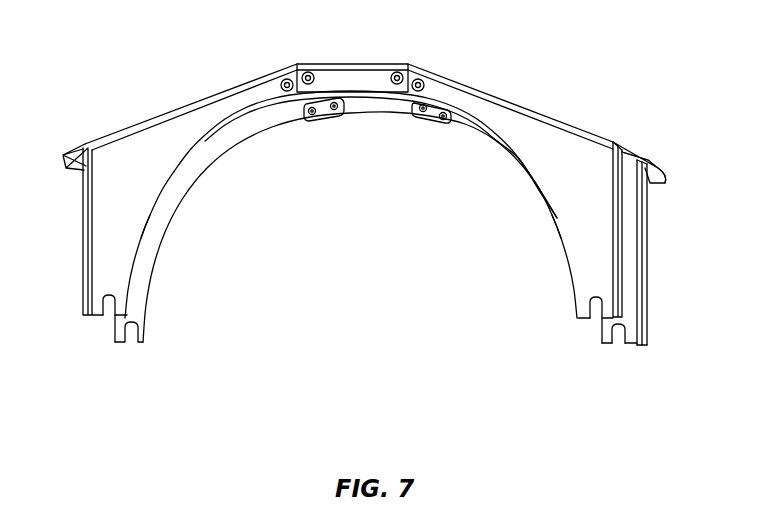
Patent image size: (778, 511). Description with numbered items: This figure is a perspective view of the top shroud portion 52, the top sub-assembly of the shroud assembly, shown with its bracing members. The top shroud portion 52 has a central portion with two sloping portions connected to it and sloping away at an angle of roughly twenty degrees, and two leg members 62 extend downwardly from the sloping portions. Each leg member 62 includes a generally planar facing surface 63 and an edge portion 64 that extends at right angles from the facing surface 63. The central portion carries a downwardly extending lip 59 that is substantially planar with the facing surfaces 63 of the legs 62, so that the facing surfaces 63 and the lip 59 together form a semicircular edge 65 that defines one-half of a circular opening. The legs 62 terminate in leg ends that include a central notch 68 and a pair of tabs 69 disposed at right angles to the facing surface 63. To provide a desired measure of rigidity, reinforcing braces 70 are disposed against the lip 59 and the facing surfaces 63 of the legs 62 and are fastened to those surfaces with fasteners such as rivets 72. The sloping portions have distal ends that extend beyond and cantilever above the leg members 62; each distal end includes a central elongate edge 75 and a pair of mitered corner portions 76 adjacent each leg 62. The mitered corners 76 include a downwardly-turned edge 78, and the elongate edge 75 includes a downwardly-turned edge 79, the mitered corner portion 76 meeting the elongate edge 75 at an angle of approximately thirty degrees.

The top shroud portion 52 is at (490, 68).
The downwardly extending lip 59 is at (360, 82).
The leg member 62 is at (102, 253).
The facing surface 63 is at (130, 208).
The edge portion 64 is at (650, 323).
The semicircular edge 65 is at (215, 187).
The central notch 68 is at (130, 342).
The tab 69 is at (118, 348).
The reinforcing brace 70 is at (321, 110).
The rivet 72 is at (285, 80).
The central elongate edge 75 is at (662, 182).
The mitered corner portion 76 is at (622, 140).
The downwardly-turned edge 78 is at (643, 150).
The downwardly-turned edge 79 is at (663, 172).